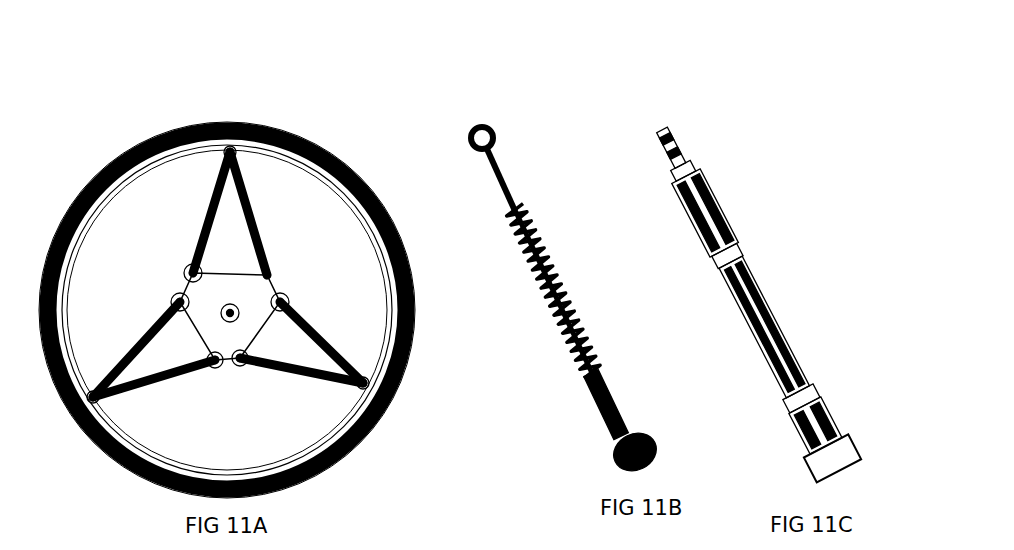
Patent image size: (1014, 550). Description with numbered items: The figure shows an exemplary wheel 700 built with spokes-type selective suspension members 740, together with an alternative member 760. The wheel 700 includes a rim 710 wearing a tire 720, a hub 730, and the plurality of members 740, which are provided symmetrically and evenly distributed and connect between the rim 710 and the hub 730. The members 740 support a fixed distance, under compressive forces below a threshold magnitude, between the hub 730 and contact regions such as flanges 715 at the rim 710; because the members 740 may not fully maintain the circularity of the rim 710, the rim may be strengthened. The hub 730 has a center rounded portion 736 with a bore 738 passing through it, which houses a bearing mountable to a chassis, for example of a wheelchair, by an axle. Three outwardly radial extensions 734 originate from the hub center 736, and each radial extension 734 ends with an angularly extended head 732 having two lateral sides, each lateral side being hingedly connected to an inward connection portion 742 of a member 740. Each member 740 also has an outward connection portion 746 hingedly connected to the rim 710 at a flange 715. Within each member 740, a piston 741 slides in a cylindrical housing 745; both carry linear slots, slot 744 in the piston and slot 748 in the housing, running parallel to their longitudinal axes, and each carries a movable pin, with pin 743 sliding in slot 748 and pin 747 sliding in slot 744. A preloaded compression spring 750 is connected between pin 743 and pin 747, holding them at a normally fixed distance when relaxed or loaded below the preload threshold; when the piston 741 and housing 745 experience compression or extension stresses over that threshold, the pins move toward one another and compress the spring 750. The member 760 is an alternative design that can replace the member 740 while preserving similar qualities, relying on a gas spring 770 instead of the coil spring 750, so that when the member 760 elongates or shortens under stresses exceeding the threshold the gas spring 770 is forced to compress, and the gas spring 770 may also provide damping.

In FIG. 11A, the wheel 700 is at (158, 103).
In FIG. 11A, the rim 710 is at (268, 121).
In FIG. 11A, the flange 715 is at (368, 385).
In FIG. 11A, the tire 720 is at (203, 122).
In FIG. 11A, the hub 730 is at (243, 283).
In FIG. 11A, the angularly extended head 732 is at (286, 298).
In FIG. 11A, the radial extension 734 is at (212, 297).
In FIG. 11A, the center rounded portion 736 is at (213, 323).
In FIG. 11A, the bore 738 is at (237, 354).
In FIG. 11A, the spokes type selective suspension member 740 is at (316, 312).
In FIG. 11B, the piston 741 is at (502, 163).
In FIG. 11B, the inward connection portion 742 is at (470, 138).
In FIG. 11B, the movable pin 743 is at (608, 370).
In FIG. 11B, the linear slot 744 is at (517, 253).
In FIG. 11B, the cylindrical housing 745 is at (613, 432).
In FIG. 11B, the outward connection portion 746 is at (648, 437).
In FIG. 11B, the movable pin 747 is at (522, 203).
In FIG. 11B, the linear slot 748 is at (560, 352).
In FIG. 11B, the preloaded compression spring 750 is at (562, 283).
In FIG. 11C, the member 760 is at (727, 114).
In FIG. 11C, the gas spring 770 is at (760, 297).